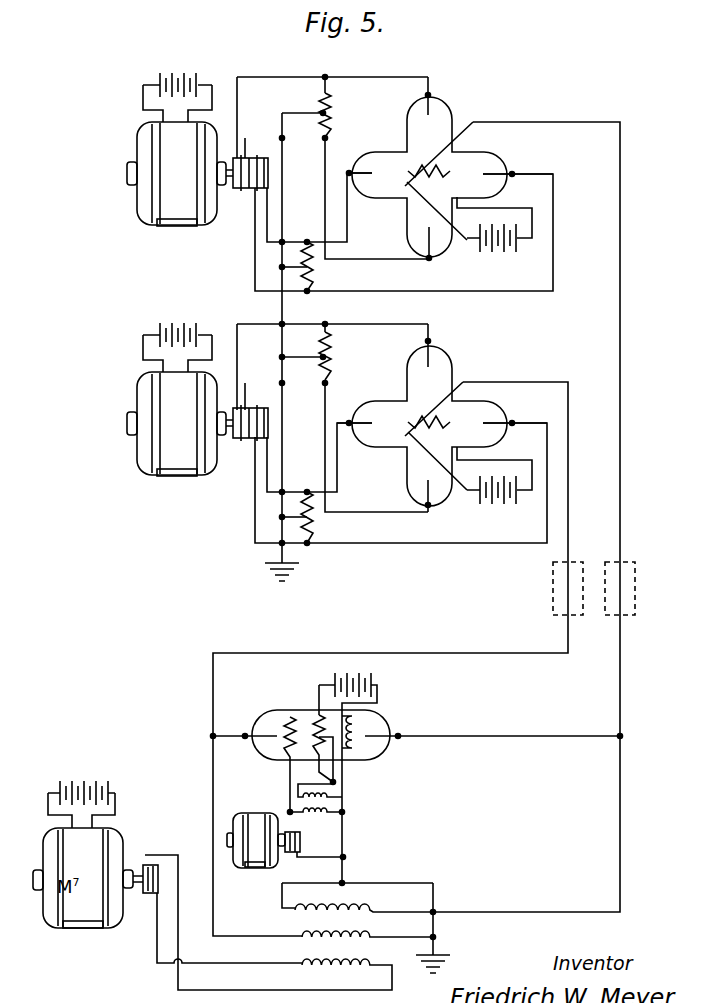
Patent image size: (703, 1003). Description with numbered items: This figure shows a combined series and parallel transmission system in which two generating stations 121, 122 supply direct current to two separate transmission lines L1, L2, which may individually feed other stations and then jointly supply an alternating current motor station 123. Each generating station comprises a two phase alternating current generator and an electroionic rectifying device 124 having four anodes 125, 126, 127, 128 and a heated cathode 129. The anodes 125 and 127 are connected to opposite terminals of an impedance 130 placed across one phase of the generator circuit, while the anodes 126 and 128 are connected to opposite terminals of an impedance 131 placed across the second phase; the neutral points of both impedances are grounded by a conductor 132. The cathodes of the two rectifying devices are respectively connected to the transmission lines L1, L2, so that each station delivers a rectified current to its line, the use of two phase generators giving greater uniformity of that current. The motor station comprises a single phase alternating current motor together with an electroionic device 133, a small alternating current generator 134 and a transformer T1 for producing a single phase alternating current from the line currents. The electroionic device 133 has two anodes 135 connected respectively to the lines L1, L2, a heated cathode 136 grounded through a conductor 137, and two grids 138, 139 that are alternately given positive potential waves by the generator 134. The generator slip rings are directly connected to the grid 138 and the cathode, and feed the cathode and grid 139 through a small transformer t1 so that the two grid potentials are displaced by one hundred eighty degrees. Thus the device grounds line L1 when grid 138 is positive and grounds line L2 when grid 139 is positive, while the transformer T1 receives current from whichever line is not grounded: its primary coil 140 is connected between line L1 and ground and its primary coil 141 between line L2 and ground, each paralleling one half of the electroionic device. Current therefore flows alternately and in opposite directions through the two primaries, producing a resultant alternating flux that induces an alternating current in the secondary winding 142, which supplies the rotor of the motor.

The generating station 121 is at (179, 149).
The generating station 122 is at (174, 399).
The alternating current motor station 123 is at (151, 851).
The electroionic rectifying device 124 is at (420, 101).
The anode 125 is at (440, 100).
The anode 126 is at (373, 176).
The anode 127 is at (430, 256).
The anode 128 is at (500, 172).
The heated cathode 129 is at (407, 168).
The impedance 130 is at (329, 110).
The impedance 131 is at (311, 270).
The conductor 132 is at (282, 306).
The electroionic device 133 is at (360, 762).
The small alternating current generator 134 is at (262, 868).
The anode 135 is at (262, 728).
The heated cathode 136 is at (318, 712).
The conductor 137 is at (345, 863).
The grid 138 is at (283, 714).
The grid 139 is at (358, 726).
The primary coil 140 is at (300, 934).
The primary coil 141 is at (366, 906).
The secondary winding 142 is at (302, 967).
The transmission line L1 is at (572, 543).
The transmission line L2 is at (623, 543).
The transformer T1 is at (373, 912).
The transformer t1 is at (311, 814).